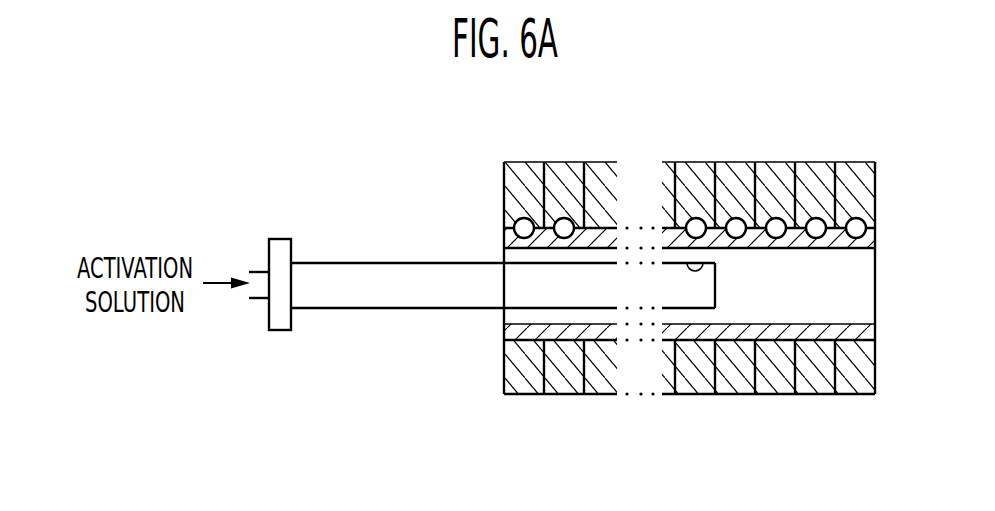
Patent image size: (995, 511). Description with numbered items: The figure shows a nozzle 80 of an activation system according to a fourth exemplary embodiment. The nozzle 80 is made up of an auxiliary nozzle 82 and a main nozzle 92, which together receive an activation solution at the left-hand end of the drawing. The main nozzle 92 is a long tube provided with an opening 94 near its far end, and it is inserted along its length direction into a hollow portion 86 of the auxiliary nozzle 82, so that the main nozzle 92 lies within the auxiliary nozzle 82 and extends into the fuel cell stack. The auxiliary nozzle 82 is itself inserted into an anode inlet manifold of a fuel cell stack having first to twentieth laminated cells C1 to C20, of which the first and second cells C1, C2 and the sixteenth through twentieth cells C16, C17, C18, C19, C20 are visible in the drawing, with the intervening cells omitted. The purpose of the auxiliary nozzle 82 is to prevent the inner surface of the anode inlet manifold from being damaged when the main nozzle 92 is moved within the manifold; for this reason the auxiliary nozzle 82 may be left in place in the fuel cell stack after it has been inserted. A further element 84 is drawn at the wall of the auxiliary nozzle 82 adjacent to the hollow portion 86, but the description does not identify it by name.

The nozzle 80 is at (518, 318).
The auxiliary nozzle 82 is at (865, 235).
The perforated plate 84 is at (862, 250).
The hollow portion 86 is at (853, 298).
The main nozzle 92 is at (429, 273).
The opening 94 is at (703, 268).
The first laminated cell C1 is at (527, 260).
The second laminated cell C2 is at (568, 260).
The sixteenth laminated cell C16 is at (694, 260).
The seventeenth laminated cell C17 is at (737, 260).
The eighteenth laminated cell C18 is at (776, 260).
The nineteenth laminated cell C19 is at (816, 260).
The twentieth laminated cell C20 is at (856, 260).